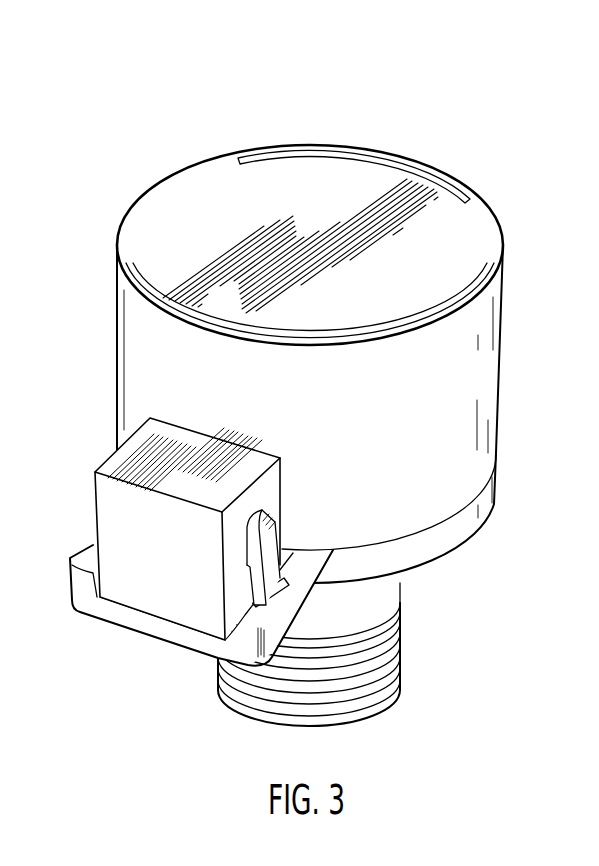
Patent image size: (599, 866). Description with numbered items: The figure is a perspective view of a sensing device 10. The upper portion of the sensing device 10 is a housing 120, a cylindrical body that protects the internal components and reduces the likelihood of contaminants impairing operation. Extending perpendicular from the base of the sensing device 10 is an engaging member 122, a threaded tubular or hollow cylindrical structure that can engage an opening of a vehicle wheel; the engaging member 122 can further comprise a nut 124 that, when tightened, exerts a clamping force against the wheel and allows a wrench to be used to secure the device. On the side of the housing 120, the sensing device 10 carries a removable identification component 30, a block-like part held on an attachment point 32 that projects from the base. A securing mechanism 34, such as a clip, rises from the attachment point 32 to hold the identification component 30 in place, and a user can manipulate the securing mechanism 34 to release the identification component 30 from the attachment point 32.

The sensing device 10 is at (277, 378).
The housing 120 is at (128, 312).
The engaging member 122 is at (358, 694).
The nut 124 is at (380, 601).
The identification component 30 is at (107, 504).
The attachment point 32 is at (81, 602).
The securing mechanism 34 is at (247, 550).